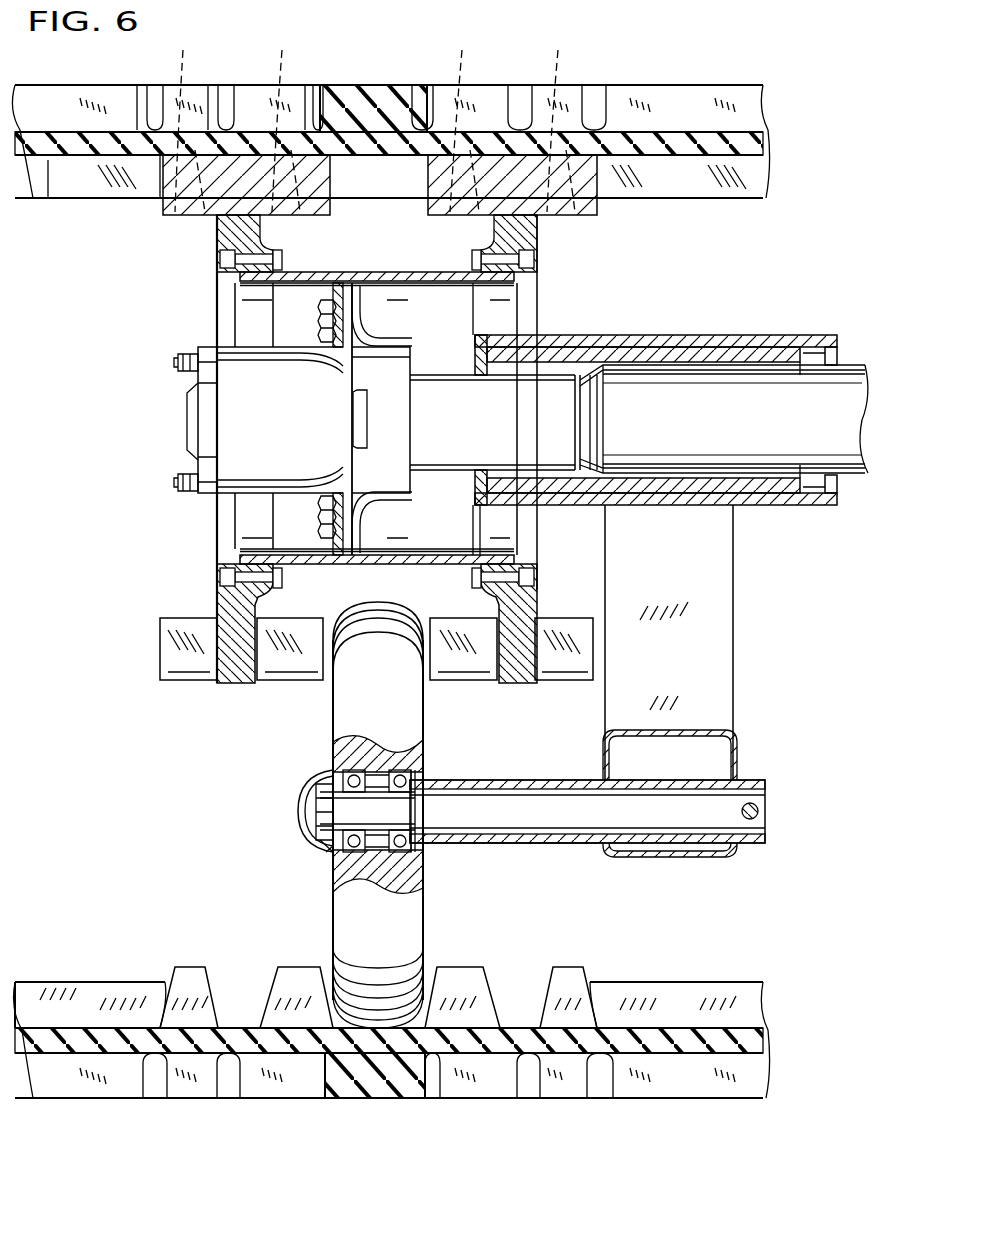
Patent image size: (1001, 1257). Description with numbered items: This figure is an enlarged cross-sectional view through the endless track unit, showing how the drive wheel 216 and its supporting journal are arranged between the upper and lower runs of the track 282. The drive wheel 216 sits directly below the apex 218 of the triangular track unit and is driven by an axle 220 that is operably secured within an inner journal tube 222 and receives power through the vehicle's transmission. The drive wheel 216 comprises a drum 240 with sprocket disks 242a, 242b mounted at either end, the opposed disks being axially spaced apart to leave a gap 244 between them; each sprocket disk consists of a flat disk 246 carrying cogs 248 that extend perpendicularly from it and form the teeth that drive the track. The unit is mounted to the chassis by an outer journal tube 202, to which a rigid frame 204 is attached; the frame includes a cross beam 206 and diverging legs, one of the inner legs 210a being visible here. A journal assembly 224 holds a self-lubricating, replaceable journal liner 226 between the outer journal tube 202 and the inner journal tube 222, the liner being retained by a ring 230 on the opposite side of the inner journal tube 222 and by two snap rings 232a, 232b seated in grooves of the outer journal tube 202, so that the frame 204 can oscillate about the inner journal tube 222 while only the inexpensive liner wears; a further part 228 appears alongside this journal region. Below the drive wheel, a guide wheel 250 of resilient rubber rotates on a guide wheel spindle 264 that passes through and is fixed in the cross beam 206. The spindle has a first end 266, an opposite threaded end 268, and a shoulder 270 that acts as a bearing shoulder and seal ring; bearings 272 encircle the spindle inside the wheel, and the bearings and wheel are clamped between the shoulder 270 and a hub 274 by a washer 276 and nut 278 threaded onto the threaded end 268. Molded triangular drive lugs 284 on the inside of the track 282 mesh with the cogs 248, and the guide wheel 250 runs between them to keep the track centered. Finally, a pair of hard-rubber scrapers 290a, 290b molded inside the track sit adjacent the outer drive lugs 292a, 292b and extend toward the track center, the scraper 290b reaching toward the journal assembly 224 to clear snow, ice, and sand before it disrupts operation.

The outer journal tube 202 is at (678, 340).
The rigid frame 204 is at (735, 681).
The cross beam 206 is at (712, 755).
The inner leg 210a is at (720, 628).
The drive wheel 216 is at (190, 320).
The apex 218 is at (362, 153).
The axle 220 is at (745, 390).
The inner journal tube 222 is at (610, 348).
The journal assembly 224 is at (638, 415).
The journal liner 226 is at (742, 365).
The end cap 228 is at (800, 498).
The ring 230 is at (470, 370).
The snap ring 232a is at (470, 485).
The snap ring 232b is at (822, 342).
The drum 240 is at (368, 268).
The sprocket disk 242a is at (202, 243).
The sprocket disk 242b is at (553, 245).
The gap 244 is at (335, 592).
The flat disk 246 is at (236, 684).
The cog 248 is at (165, 205).
The guide wheel 250 is at (418, 950).
The guide wheel spindle 264 is at (548, 845).
The first end 266 is at (768, 802).
The threaded end 268 is at (318, 808).
The shoulder 270 is at (407, 807).
The bearing 272 is at (425, 748).
The hub 274 is at (310, 775).
The washer 276 is at (318, 845).
The nut 278 is at (322, 822).
The track 282 is at (695, 140).
The drive lug 284 is at (572, 980).
The scraper 290a is at (48, 185).
The scraper 290b is at (733, 185).
The outer drive lug 292a is at (165, 1000).
The outer drive lug 292b is at (598, 1005).